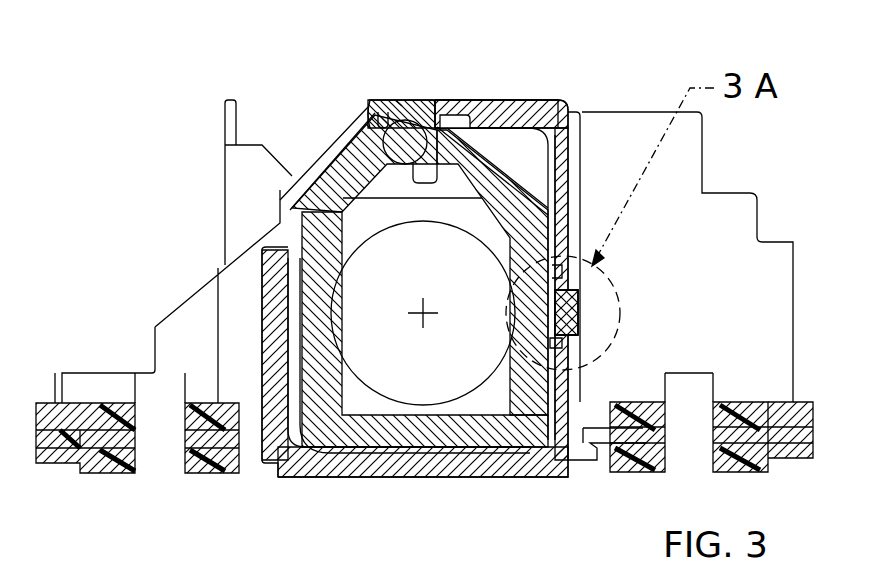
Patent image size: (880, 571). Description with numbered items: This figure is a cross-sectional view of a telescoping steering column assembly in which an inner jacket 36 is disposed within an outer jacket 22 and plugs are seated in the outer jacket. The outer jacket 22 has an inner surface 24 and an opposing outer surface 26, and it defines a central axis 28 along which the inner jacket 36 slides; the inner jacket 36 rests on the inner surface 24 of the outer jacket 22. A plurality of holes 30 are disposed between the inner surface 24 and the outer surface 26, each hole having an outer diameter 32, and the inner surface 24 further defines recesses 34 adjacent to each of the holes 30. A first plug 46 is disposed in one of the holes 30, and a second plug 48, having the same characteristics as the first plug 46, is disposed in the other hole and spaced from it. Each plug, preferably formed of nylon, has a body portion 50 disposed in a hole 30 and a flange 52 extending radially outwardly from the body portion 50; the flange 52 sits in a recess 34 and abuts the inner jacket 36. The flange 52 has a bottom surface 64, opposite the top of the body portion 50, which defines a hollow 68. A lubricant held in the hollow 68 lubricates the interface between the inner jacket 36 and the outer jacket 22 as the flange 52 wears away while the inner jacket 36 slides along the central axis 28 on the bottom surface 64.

The outer jacket 22 is at (557, 477).
The inner surface 24 is at (330, 437).
The outer surface 26 is at (532, 100).
The central axis 28 is at (423, 322).
The holes 30 is at (441, 116).
The outer diameter 32 is at (380, 108).
The recesses 34 is at (478, 126).
The inner jacket 36 is at (388, 447).
The first plug 46 is at (402, 104).
The second plug 48 is at (578, 302).
The body portion 50 is at (425, 101).
The flange 52 is at (382, 114).
The bottom surface 64 is at (430, 160).
The hollow 68 is at (392, 133).